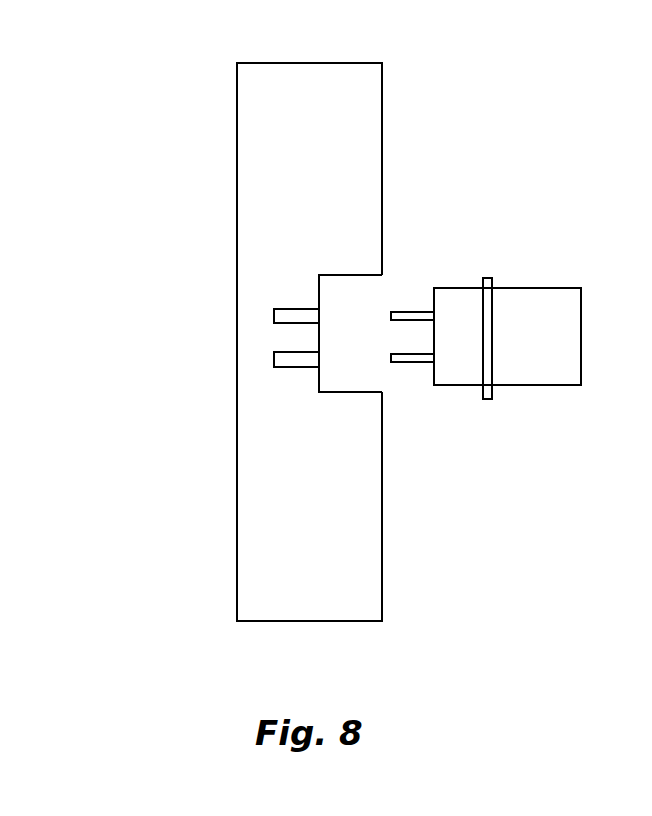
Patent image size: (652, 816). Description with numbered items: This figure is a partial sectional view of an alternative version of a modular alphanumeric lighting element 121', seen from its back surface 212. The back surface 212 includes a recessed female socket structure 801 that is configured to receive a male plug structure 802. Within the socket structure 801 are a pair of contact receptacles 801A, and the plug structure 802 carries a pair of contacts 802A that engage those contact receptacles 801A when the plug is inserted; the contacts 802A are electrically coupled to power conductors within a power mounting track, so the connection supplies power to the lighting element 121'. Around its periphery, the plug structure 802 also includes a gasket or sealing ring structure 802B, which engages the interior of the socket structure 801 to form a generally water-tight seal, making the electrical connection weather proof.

The lighting element 121' is at (321, 342).
The back surface 212 is at (382, 107).
The female socket structure 801 is at (343, 321).
The contact receptacles 801A is at (277, 330).
The male plug structure 802 is at (517, 361).
The contacts 802A is at (402, 346).
The sealing ring structure 802B is at (490, 278).